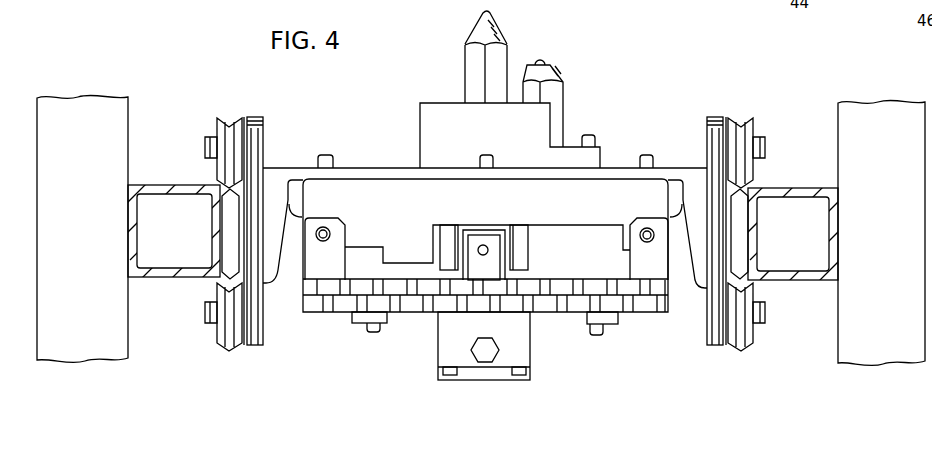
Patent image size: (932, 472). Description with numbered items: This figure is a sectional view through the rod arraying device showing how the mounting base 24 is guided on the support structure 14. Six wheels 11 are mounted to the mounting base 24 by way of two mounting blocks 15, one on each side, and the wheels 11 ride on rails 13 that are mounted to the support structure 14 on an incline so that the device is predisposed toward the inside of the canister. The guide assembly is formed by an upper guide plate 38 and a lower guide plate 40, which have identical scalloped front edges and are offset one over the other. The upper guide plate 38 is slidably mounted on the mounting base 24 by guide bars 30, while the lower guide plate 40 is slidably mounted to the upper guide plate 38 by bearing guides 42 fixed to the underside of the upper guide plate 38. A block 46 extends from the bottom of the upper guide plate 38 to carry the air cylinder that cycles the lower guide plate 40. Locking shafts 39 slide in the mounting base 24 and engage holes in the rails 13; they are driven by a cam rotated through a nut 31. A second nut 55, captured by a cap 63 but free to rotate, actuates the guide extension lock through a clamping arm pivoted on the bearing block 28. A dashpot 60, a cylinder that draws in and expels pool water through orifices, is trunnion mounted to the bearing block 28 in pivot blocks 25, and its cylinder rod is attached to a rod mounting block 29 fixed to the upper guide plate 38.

The wheels 11 is at (222, 118).
The rails 13 is at (230, 237).
The support structure 14 is at (148, 185).
The mounting blocks 15 is at (263, 120).
The mounting base 24 is at (678, 168).
The pivot blocks 25 is at (447, 225).
The bearing block 28 is at (597, 213).
The rod mounting block 29 is at (488, 265).
The guide bars 30 is at (330, 234).
The nut 31 is at (483, 31).
The upper guide plate 38 is at (588, 282).
The locking shafts 39 is at (308, 219).
The lower guide plate 40 is at (662, 312).
The bearing guides 42 is at (356, 321).
The block 46 is at (492, 373).
The nut 55 is at (560, 72).
The dashpot 60 is at (493, 229).
The cap 63 is at (600, 147).